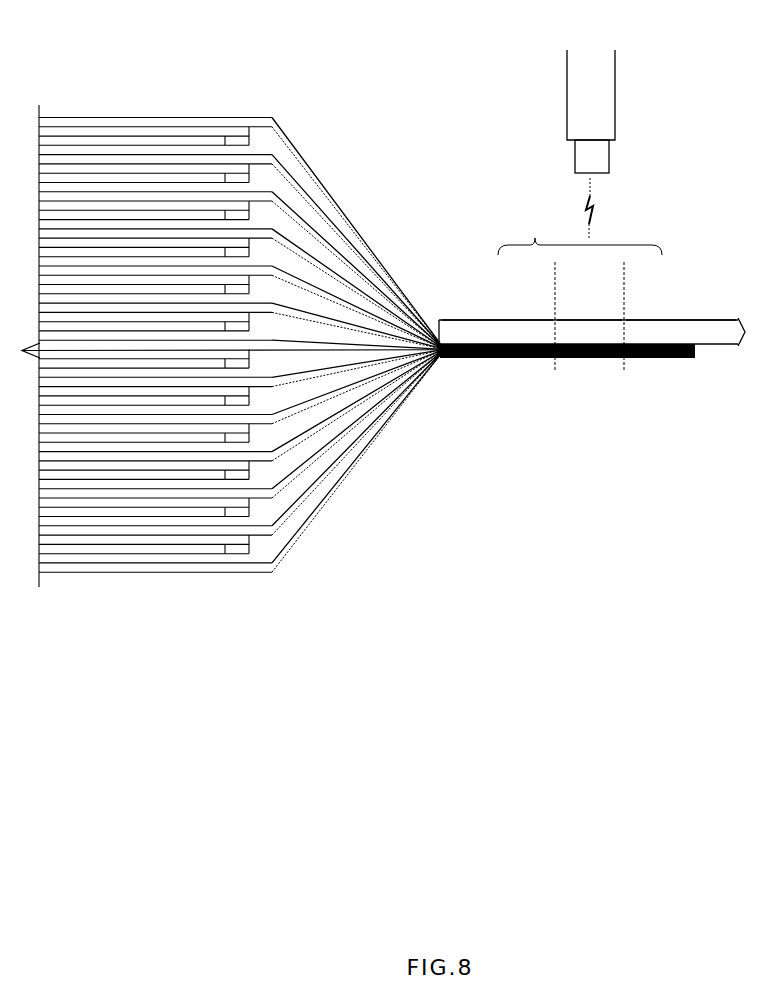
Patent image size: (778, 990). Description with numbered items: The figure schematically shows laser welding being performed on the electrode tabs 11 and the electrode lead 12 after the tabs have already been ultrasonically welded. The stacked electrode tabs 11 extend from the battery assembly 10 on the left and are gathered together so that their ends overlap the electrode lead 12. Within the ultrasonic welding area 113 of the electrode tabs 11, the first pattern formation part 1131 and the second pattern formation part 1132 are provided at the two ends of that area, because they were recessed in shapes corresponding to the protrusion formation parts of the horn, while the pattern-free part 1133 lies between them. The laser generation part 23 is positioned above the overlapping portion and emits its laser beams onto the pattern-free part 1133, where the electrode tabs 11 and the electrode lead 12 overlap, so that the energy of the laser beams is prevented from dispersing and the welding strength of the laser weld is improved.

The layered stack / stator core laminations 10 is at (212, 99).
The electrode tab 11 is at (363, 213).
The electrode lead 12 is at (706, 328).
The ultrasonic welding area 113 is at (580, 294).
The first pattern formation part 1131 is at (512, 319).
The pattern-free part 1133 is at (590, 319).
The second pattern formation part 1132 is at (650, 319).
The laser generation part 23 is at (616, 93).